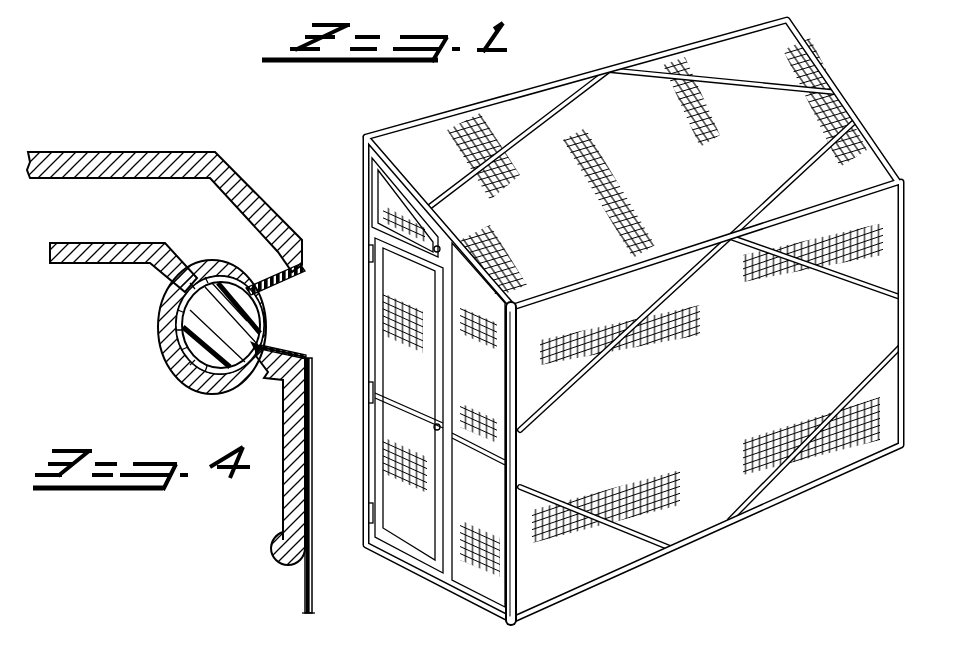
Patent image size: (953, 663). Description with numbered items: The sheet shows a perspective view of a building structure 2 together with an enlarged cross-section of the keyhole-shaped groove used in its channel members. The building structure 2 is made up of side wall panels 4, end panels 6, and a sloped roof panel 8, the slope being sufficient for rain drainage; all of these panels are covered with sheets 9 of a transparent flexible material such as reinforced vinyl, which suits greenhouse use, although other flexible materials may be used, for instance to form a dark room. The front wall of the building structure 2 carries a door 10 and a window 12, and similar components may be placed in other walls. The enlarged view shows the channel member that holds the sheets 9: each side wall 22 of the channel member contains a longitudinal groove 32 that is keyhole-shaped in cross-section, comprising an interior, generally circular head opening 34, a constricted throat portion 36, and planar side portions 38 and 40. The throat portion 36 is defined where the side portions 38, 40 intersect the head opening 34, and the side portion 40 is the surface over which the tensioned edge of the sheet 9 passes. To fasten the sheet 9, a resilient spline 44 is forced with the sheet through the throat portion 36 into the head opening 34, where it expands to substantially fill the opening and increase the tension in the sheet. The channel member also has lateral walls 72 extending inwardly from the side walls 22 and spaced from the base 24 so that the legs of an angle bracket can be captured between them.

In FIG. 1, the building structure 2 is at (870, 106).
In FIG. 1, the side wall panels 4 is at (711, 500).
In FIG. 1, the end panels 6 is at (482, 567).
In FIG. 1, the roof panel 8 is at (607, 93).
In FIG. 1, the sheets of transparent material 9 is at (815, 468).
In FIG. 4, the sheets of transparent material 9 is at (305, 589).
In FIG. 1, the door 10 is at (397, 460).
In FIG. 1, the window 12 is at (387, 203).
In FIG. 4, the side walls 22 is at (293, 505).
In FIG. 4, the base 24 is at (172, 152).
In FIG. 4, the longitudinal groove 32 is at (280, 315).
In FIG. 4, the head opening 34 is at (190, 347).
In FIG. 4, the throat portion 36 is at (262, 372).
In FIG. 4, the side portion 38 is at (253, 282).
In FIG. 4, the side portion 40 is at (289, 352).
In FIG. 4, the resilient spline 44 is at (207, 333).
In FIG. 4, the lateral walls 72 is at (100, 243).